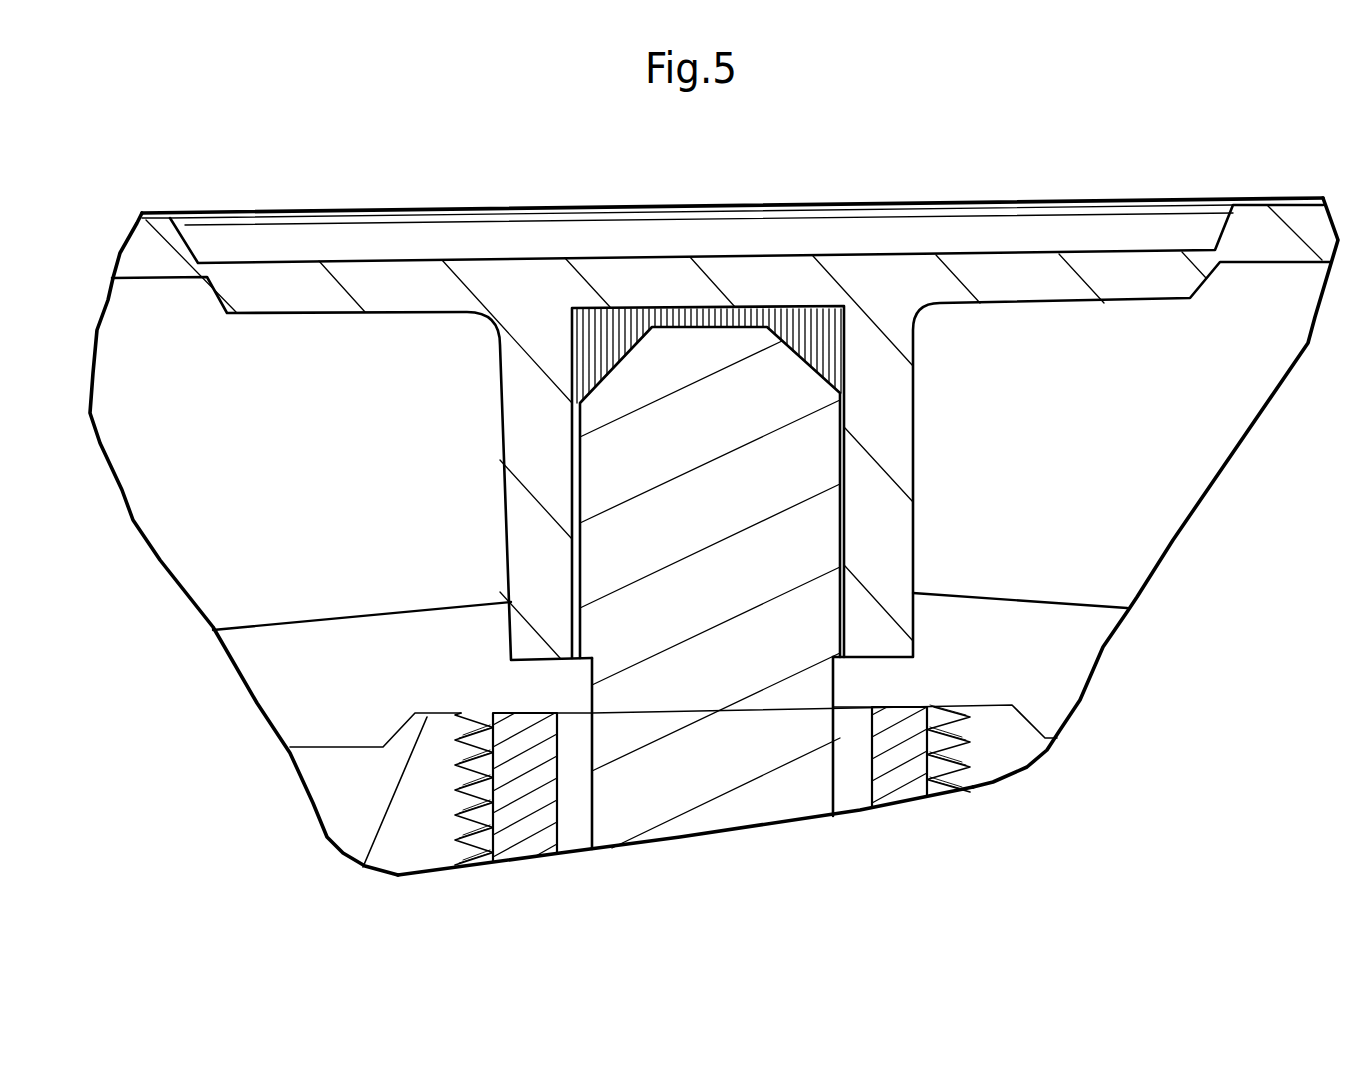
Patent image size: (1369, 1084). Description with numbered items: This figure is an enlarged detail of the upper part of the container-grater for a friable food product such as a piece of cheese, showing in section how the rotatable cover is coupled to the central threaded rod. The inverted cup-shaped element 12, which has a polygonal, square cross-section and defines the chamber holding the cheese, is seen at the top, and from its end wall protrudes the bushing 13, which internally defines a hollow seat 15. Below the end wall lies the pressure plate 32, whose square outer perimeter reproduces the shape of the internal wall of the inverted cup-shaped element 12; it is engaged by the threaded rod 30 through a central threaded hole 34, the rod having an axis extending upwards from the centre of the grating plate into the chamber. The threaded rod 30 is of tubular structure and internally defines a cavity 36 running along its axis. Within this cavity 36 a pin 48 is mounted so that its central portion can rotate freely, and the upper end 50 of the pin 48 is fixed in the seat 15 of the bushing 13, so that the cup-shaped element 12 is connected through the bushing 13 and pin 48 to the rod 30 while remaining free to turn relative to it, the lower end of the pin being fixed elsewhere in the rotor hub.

The inverted cup-shaped element 12 is at (1200, 193).
The bushing 13 is at (905, 522).
The hollow seat 15 is at (843, 347).
The threaded rod 30 is at (513, 813).
The pressure plate 32 is at (338, 813).
The threaded hole 34 is at (460, 790).
The cavity 36 is at (565, 810).
The pin 48 is at (795, 825).
The upper end 50 is at (712, 350).